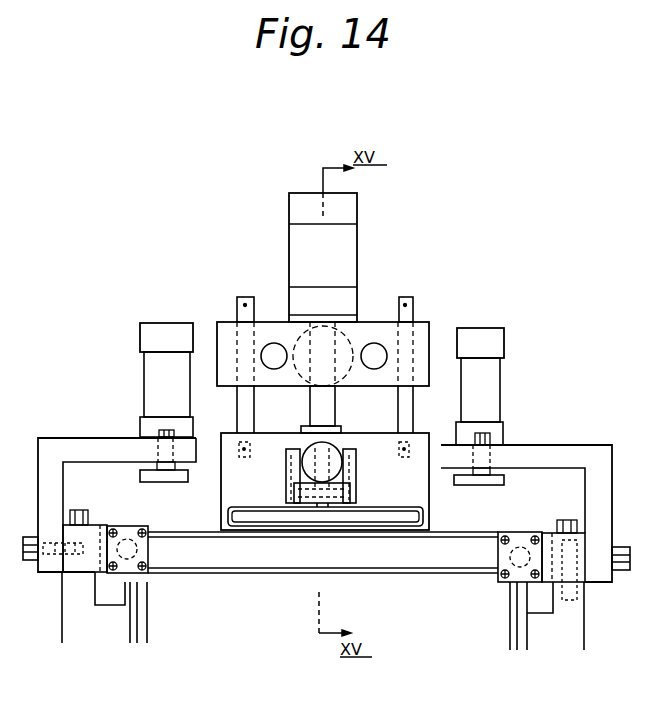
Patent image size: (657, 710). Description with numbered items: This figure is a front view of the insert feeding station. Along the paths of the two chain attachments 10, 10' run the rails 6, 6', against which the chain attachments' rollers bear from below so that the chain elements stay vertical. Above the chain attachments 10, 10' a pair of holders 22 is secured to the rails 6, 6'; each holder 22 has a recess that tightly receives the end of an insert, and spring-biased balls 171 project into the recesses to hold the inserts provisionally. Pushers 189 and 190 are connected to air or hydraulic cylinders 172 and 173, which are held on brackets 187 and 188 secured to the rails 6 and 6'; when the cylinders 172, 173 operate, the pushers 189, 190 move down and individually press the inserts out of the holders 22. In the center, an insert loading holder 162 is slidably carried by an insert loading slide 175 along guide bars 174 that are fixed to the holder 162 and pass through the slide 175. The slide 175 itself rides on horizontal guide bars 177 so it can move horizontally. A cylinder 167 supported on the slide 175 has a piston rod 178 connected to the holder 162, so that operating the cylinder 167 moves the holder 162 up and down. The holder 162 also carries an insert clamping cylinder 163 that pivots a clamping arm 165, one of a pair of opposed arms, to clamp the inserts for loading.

The rail 6 is at (601, 616).
The rail 6' is at (47, 609).
The chain attachment 10 is at (506, 627).
The chain attachment 10' is at (148, 609).
The holder 22 is at (80, 563).
The insert loading holder 162 is at (410, 473).
The insert clamping cylinder 163 is at (337, 455).
The clamping arm 165 is at (385, 523).
The air or hydraulic cylinder 167 is at (347, 240).
The spring-biased ball 171 is at (150, 548).
The air or hydraulic cylinder 172 is at (492, 345).
The air or hydraulic cylinder 173 is at (154, 335).
The guide bar 174 is at (245, 305).
The insert loading slide 175 is at (363, 330).
The guide bar 177 is at (274, 350).
The piston rod 178 is at (333, 410).
The bracket 187 is at (552, 452).
The bracket 188 is at (78, 443).
The pusher 189 is at (504, 481).
The pusher 190 is at (140, 475).